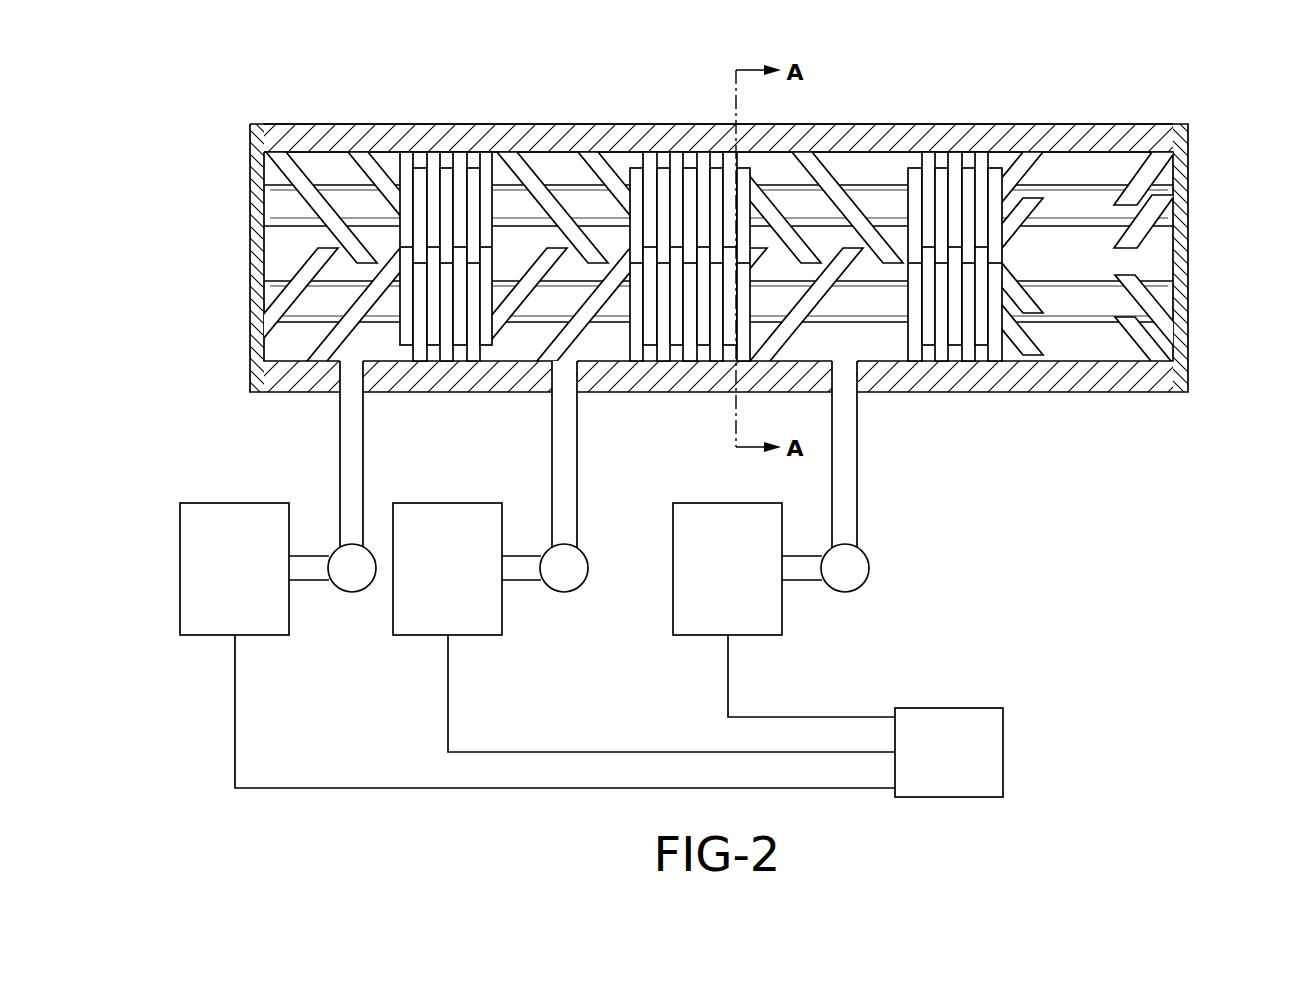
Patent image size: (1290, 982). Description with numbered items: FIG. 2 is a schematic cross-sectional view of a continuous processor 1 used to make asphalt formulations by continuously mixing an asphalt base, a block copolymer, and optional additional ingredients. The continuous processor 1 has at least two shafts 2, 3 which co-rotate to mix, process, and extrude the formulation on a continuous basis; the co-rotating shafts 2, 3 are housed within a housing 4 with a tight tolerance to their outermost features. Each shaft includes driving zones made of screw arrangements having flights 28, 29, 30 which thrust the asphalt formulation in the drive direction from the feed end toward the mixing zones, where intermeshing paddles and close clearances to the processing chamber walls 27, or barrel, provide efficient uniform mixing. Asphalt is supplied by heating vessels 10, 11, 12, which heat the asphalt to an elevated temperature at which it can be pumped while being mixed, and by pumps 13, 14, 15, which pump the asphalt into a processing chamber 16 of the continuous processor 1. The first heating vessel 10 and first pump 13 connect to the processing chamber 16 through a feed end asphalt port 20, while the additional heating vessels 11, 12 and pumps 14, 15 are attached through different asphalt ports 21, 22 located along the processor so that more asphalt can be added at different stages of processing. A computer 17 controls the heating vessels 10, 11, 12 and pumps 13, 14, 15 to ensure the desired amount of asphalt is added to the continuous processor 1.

The continuous processor 1 is at (1238, 146).
The shaft 2 is at (296, 205).
The shaft 3 is at (315, 303).
The housing 4 is at (408, 138).
The first heating vessel 10 is at (223, 503).
The heating vessel 11 is at (468, 503).
The heating vessel 12 is at (717, 503).
The first pump 13 is at (350, 593).
The pump 14 is at (562, 593).
The pump 15 is at (842, 593).
The processing chamber 16 is at (288, 255).
The computer 17 is at (619, 716).
The feed end asphalt port 20 is at (353, 380).
The asphalt port 21 is at (567, 390).
The asphalt port 22 is at (847, 380).
The processing chamber walls 27 is at (570, 168).
The flight 28 is at (300, 184).
The flight 29 is at (528, 178).
The flight 30 is at (852, 210).